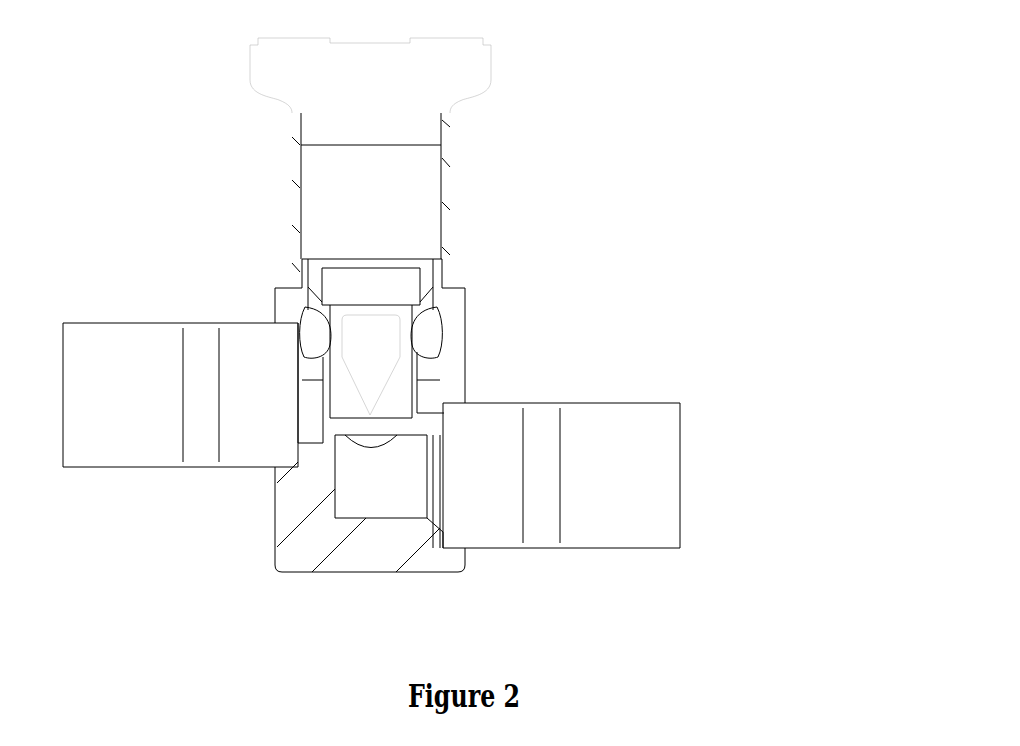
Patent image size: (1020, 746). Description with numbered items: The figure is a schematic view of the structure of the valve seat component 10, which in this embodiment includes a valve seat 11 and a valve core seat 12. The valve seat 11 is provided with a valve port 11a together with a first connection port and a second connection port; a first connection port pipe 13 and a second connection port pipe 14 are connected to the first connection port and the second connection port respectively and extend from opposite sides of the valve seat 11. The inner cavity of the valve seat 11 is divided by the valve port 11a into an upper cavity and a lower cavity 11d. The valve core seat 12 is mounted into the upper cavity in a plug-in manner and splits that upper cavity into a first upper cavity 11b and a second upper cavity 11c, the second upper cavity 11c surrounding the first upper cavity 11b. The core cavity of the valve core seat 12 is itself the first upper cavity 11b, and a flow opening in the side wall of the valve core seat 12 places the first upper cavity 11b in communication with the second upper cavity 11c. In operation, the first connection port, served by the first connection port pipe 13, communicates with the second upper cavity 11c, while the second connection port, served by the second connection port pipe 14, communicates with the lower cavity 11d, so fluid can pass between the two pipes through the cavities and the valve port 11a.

The valve seat component 10 is at (481, 147).
The valve seat 11 is at (312, 551).
The valve port 11a is at (392, 436).
The first upper cavity 11b is at (370, 363).
The second upper cavity 11c is at (312, 398).
The lower cavity 11d is at (377, 472).
The valve core seat 12 is at (443, 283).
The first connection port pipe 13 is at (163, 466).
The second connection port pipe 14 is at (663, 483).